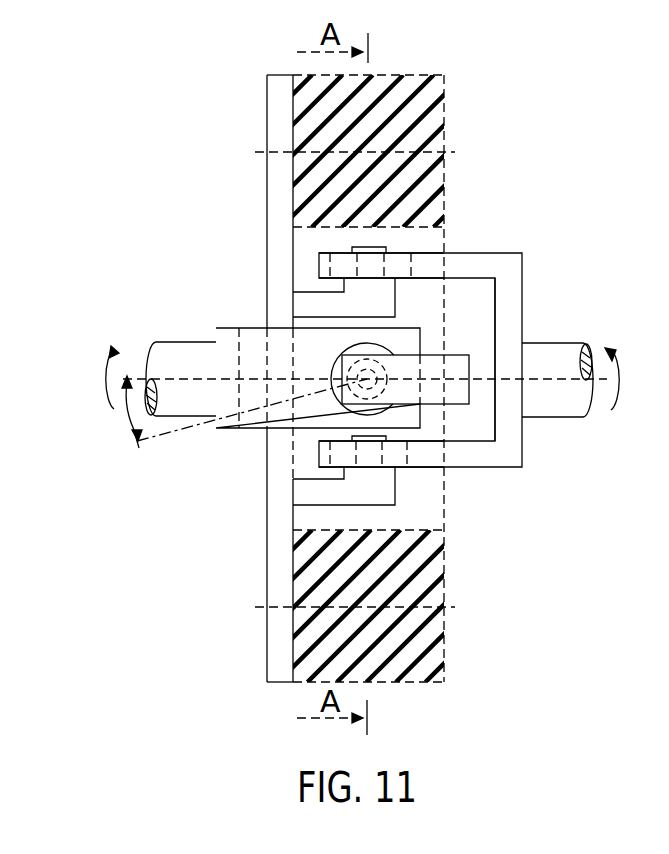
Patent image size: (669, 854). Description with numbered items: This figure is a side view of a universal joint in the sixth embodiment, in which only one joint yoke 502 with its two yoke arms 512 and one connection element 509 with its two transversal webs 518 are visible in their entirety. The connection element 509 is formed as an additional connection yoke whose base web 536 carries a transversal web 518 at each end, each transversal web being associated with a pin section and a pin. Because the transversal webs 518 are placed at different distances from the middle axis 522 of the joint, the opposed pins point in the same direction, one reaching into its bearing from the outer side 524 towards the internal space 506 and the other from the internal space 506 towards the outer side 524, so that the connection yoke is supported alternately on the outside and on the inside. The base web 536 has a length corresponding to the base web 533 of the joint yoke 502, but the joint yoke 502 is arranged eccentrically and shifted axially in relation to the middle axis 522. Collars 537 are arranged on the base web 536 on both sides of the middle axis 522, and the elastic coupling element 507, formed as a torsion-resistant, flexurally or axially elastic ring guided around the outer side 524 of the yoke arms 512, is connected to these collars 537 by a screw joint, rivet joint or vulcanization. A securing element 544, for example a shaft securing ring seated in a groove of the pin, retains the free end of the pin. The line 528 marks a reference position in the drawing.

The connection element 509 is at (278, 191).
The securing element 544 is at (355, 251).
The base web 536 is at (278, 289).
The yoke arm 512 is at (458, 262).
The outer side 524 is at (510, 251).
The joint yoke 502 is at (509, 296).
The middle axis of the joint 522 is at (553, 372).
The base web of the joint yoke 533 is at (507, 420).
The internal space 506 is at (473, 423).
The transversal web 518 is at (312, 490).
The reference line 528 is at (258, 600).
The collar 537 is at (275, 641).
The elastic coupling element 507 is at (444, 651).